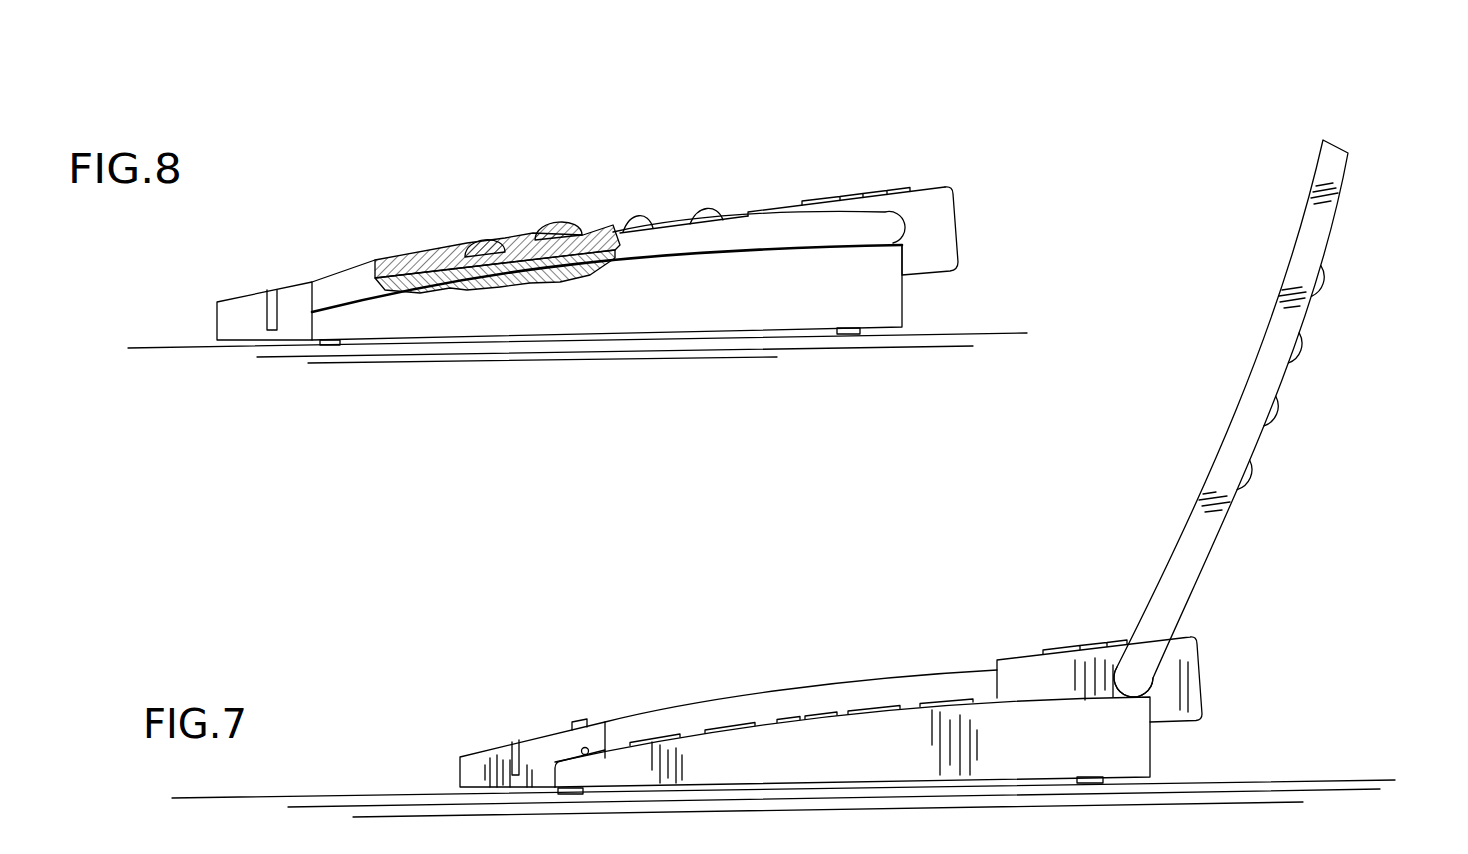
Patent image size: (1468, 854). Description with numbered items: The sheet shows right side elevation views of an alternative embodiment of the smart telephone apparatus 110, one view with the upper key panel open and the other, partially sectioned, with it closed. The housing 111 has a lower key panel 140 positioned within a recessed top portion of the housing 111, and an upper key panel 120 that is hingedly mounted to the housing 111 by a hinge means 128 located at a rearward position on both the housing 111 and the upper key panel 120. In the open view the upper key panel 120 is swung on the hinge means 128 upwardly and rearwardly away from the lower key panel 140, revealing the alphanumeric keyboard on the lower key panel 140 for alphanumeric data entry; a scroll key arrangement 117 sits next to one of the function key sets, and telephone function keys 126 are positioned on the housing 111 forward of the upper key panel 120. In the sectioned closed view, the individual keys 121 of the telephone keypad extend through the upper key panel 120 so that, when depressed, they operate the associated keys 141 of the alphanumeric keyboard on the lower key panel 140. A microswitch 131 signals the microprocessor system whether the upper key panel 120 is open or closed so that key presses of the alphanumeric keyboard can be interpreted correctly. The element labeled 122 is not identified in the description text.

In FIG. 8, the smart telephone apparatus 110 is at (644, 242).
In FIG. 8, the housing 111 is at (937, 223).
In FIG. 7, the housing 111 is at (1128, 744).
In FIG. 8, the scroll key arrangement 117 is at (824, 190).
In FIG. 7, the scroll key arrangement 117 is at (1076, 644).
In FIG. 8, the upper key panel 120 is at (682, 222).
In FIG. 7, the upper key panel 120 is at (1320, 233).
In FIG. 8, the keys 121 is at (563, 223).
In FIG. 7, the keys 121 is at (1300, 347).
In FIG. 8, the latch slot 122 is at (271, 290).
In FIG. 7, the latch slot 122 is at (510, 744).
In FIG. 7, the telephone function keys 126 is at (578, 721).
In FIG. 8, the hinge means 128 is at (893, 228).
In FIG. 7, the hinge means 128 is at (1143, 677).
In FIG. 7, the microswitch 131 is at (583, 757).
In FIG. 8, the lower key panel 140 is at (539, 280).
In FIG. 7, the lower key panel 140 is at (825, 700).
In FIG. 8, the keys 141 is at (564, 283).
In FIG. 7, the keys 141 is at (797, 712).